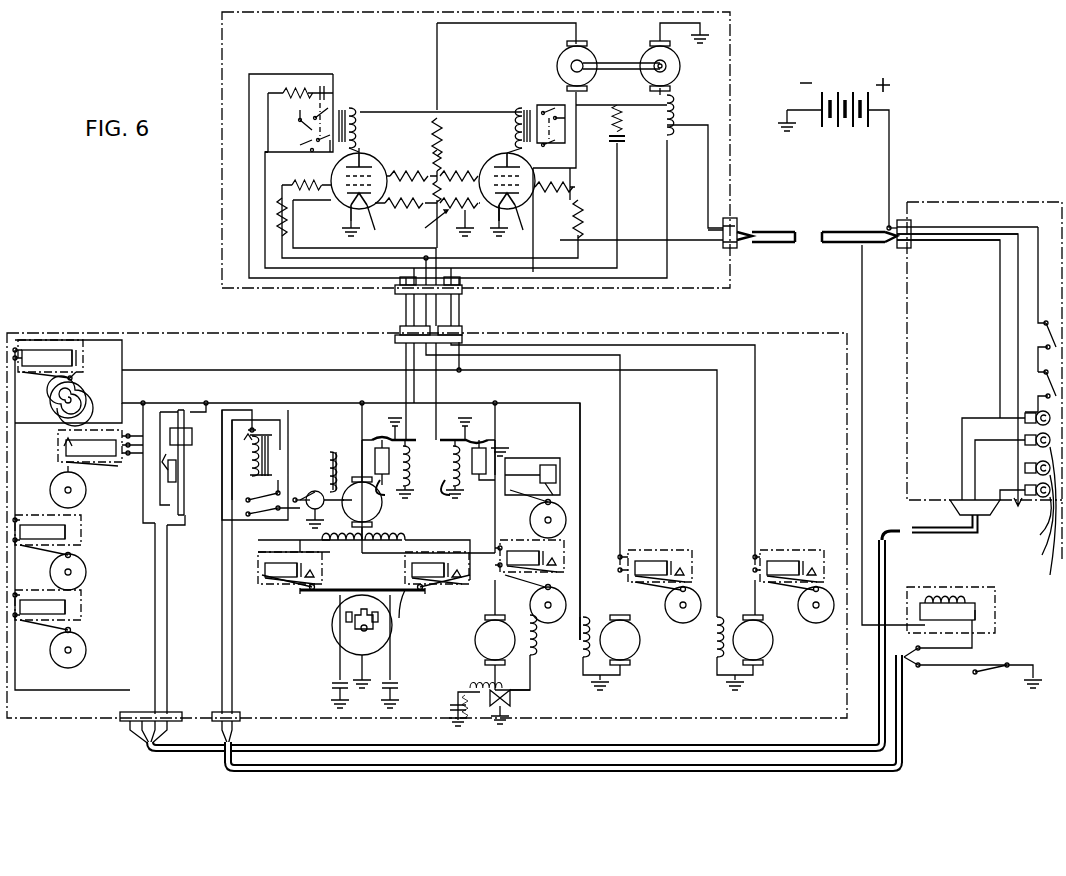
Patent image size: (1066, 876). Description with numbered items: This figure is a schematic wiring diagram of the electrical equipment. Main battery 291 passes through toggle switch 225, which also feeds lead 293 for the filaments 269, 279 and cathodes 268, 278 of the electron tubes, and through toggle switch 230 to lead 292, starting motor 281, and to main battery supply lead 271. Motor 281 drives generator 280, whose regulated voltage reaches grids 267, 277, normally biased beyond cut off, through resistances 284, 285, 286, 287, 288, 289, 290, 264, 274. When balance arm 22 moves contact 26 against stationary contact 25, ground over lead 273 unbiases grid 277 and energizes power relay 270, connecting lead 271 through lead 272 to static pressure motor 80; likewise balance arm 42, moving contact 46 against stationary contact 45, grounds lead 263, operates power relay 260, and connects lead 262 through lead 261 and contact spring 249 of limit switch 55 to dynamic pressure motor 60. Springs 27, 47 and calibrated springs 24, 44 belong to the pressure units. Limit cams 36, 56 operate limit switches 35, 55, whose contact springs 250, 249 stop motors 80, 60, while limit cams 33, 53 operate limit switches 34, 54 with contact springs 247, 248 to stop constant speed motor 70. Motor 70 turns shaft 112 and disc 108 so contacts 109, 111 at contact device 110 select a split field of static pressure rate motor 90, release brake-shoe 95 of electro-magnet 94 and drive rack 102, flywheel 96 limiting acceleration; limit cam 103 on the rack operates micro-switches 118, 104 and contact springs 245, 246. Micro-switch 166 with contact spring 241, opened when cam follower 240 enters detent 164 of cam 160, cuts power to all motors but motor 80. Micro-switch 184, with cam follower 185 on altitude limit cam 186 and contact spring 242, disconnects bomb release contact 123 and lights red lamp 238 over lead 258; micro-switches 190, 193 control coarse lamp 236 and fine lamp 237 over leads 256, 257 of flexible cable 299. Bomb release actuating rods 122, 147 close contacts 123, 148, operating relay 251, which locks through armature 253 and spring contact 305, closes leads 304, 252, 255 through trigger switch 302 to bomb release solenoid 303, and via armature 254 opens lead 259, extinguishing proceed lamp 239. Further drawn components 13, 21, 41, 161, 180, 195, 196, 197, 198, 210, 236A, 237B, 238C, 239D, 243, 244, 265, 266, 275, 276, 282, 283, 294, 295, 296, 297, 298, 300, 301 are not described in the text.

The control unit housing 13 is at (215, 47).
The solenoid coil 21 is at (481, 462).
The balance arm 22 is at (487, 440).
The calibrated spring 24 is at (459, 469).
The stationary contact 25 is at (432, 405).
The moving contact 26 is at (458, 430).
The spring 27 is at (449, 494).
The limit cam 33 is at (548, 624).
The limit switch 34 is at (562, 552).
The limit switch 35 is at (787, 546).
The limit cam 36 is at (816, 622).
The solenoid coil 41 is at (386, 462).
The balance arm 42 is at (366, 440).
The calibrated spring 44 is at (400, 488).
The stationary contact 45 is at (406, 403).
The moving contact 46 is at (392, 430).
The spring 47 is at (420, 492).
The limit cam 53 is at (538, 506).
The limit switch 54 is at (526, 458).
The limit switch 55 is at (656, 546).
The limit cam 56 is at (683, 622).
The dynamic pressure motor 60 is at (636, 634).
The constant speed motor 70 is at (475, 638).
The static pressure motor 80 is at (766, 634).
The static pressure rate motor 90 is at (370, 516).
The electro-magnet 94 is at (344, 472).
The brake-shoe 95 is at (304, 487).
The flywheel 96 is at (324, 509).
The rack 102 is at (415, 604).
The limit cam 103 is at (330, 588).
The micro-switch 104 is at (465, 542).
The disc 108 is at (385, 646).
The switch contact 109 is at (385, 629).
The contact device 110 is at (352, 629).
The switch contact 111 is at (348, 616).
The shaft 112 is at (361, 632).
The micro-switch 118 is at (300, 542).
The bomb release actuating rod 122 is at (174, 482).
The bomb release contact 123 is at (165, 477).
The bomb release actuating rod 147 is at (186, 408).
The bomb release contact 148 is at (182, 450).
The cam 160 is at (76, 406).
The spring 161 is at (58, 390).
The detent 164 is at (52, 416).
The micro-switch 166 is at (62, 356).
The motor 180 is at (54, 648).
The micro-switch 184 is at (58, 436).
The cam follower 185 is at (58, 474).
The altitude limit cam 186 is at (85, 481).
The micro-switch 190 is at (72, 534).
The micro-switch 193 is at (83, 608).
The armature pivot 195 is at (75, 629).
The motor 196 is at (85, 558).
The armature 197 is at (87, 639).
The armature pivot 198 is at (74, 552).
The indicator panel 210 is at (1008, 186).
The toggle switch 225 is at (1040, 324).
The toggle switch 230 is at (1040, 381).
The coarse target pressure orienting lamp 236 is at (1013, 429).
The indicator lamp 236A is at (1036, 414).
The fine target pressure orienting lamp 237 is at (1022, 451).
The indicator lamp 237B is at (1030, 554).
The red lamp 238 is at (1018, 471).
The indicator lamp 238C is at (1028, 536).
The proceed lamp 239 is at (1018, 491).
The indicator lamp 239D is at (996, 513).
The cam follower 240 is at (73, 376).
The contact spring 241 is at (68, 368).
The contact spring 242 is at (58, 453).
The relay 243 is at (47, 597).
The relay 244 is at (47, 521).
The contact spring 245 is at (286, 589).
The contact spring 246 is at (444, 589).
The contact spring 247 is at (537, 475).
The contact spring 248 is at (529, 550).
The contact spring 249 is at (659, 552).
The contact spring 250 is at (789, 552).
The relay 251 is at (280, 426).
The lead 252 is at (245, 398).
The armature 253 is at (282, 444).
The armature 254 is at (271, 500).
The lead 255 is at (272, 410).
The lead 256 is at (126, 707).
The lead 257 is at (132, 693).
The lead 258 is at (157, 644).
The lead 259 is at (167, 661).
The power relay 260 is at (356, 112).
The lead 261 is at (310, 76).
The lead 262 is at (580, 414).
The lead 263 is at (422, 322).
The resistance 264 is at (299, 210).
The coil 265 is at (371, 130).
The plate lead 266 is at (376, 152).
The grid 267 is at (331, 169).
The cathode 268 is at (369, 224).
The filament 269 is at (345, 200).
The power relay 270 is at (514, 112).
The main battery supply lead 271 is at (558, 100).
The lead 272 is at (764, 411).
The lead 273 is at (438, 327).
The resistance 274 is at (554, 182).
The coil 275 is at (500, 130).
The resistor 276 is at (453, 150).
The grid 277 is at (534, 169).
The cathode 278 is at (536, 221).
The filament 279 is at (476, 226).
The generator 280 is at (556, 47).
The motor 281 is at (642, 47).
The conductor 282 is at (293, 236).
The conductor 283 is at (437, 47).
The resistance 284 is at (452, 135).
The resistance 285 is at (412, 167).
The resistance 286 is at (458, 167).
The resistance 287 is at (452, 189).
The resistance 288 is at (406, 212).
The resistance 289 is at (431, 226).
The resistance 290 is at (461, 211).
The main battery 291 is at (826, 153).
The lead 292 is at (707, 197).
The lead 293 is at (978, 243).
The connector 294 is at (727, 222).
The cable 295 is at (766, 225).
The connector 296 is at (911, 217).
The conductor 297 is at (894, 218).
The cable 298 is at (849, 225).
The flexible cable 299 is at (935, 538).
The valve 300 is at (510, 696).
The resistor 301 is at (475, 704).
The trigger switch 302 is at (996, 672).
The bomb release solenoid 303 is at (978, 612).
The lead 304 is at (868, 440).
The spring contact 305 is at (165, 412).